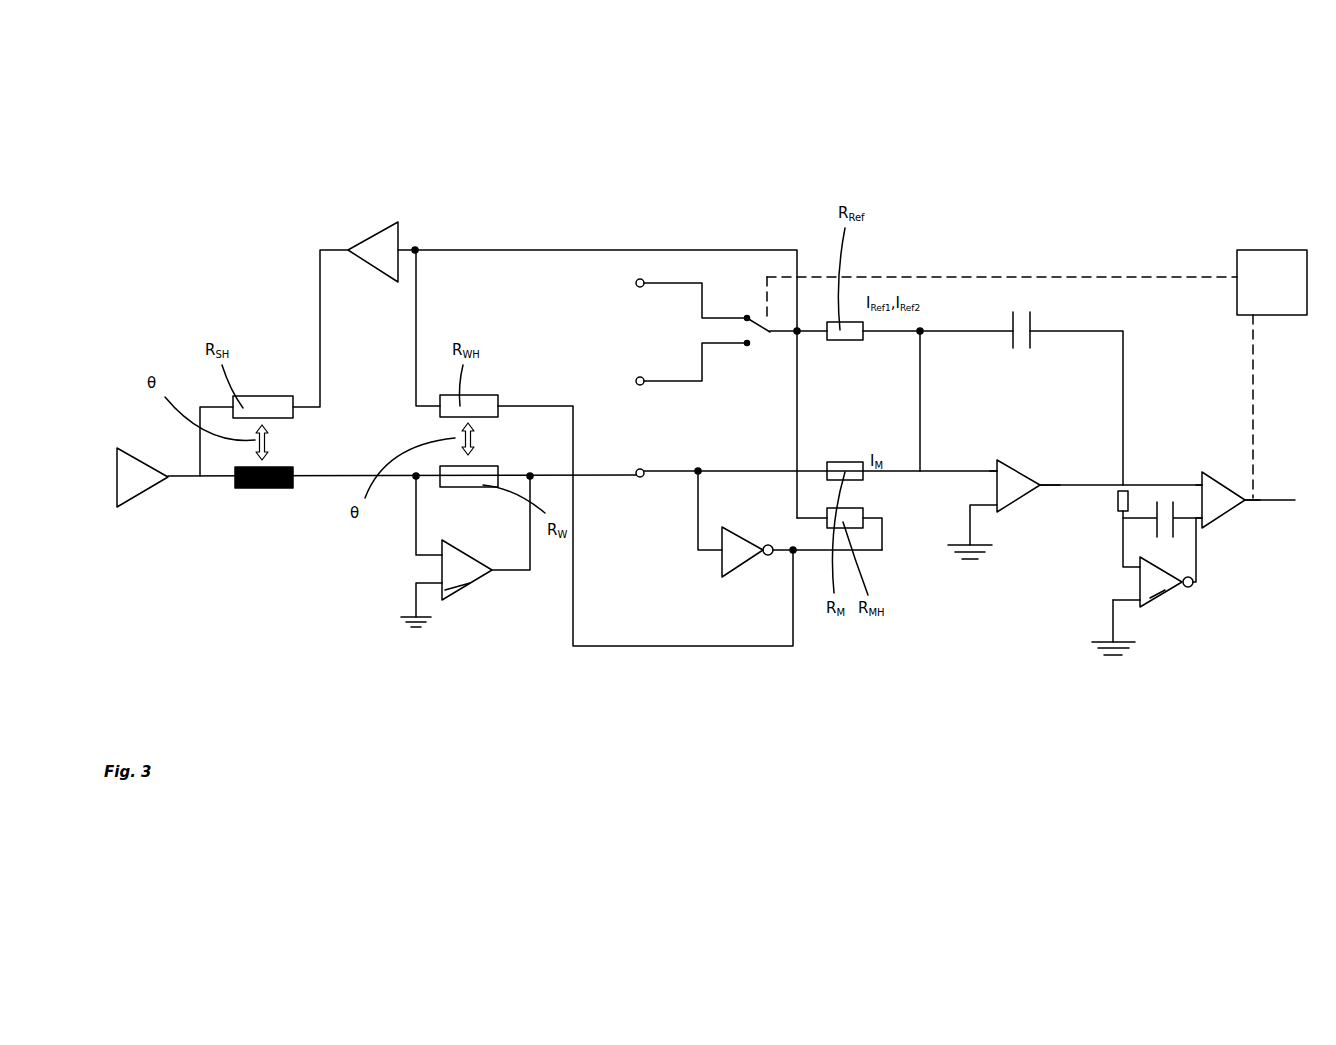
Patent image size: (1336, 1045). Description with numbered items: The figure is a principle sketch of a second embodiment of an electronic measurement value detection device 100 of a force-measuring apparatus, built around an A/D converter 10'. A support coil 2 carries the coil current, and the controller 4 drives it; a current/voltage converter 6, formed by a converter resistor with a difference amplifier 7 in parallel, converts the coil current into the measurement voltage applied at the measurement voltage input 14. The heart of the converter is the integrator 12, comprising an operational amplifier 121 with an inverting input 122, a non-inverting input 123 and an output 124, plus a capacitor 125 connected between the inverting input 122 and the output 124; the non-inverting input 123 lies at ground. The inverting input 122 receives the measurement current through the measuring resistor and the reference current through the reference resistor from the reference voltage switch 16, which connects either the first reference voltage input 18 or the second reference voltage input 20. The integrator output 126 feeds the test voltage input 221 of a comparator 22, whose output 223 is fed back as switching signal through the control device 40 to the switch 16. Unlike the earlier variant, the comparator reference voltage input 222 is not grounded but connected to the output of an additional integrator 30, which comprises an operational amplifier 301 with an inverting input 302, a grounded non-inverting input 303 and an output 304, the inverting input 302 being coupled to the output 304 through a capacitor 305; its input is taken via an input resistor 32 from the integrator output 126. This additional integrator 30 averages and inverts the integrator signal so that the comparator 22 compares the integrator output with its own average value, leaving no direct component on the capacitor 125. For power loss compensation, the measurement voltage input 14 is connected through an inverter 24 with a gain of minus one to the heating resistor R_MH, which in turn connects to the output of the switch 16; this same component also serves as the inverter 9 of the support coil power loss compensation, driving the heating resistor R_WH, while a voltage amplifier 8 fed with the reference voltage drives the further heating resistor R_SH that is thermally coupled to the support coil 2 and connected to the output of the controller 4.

The electronic measurement value detection device 100 is at (1030, 145).
The controller 4 is at (132, 483).
The support coil 2 is at (266, 490).
The voltage amplifier 8 is at (370, 250).
The current/voltage converter 6 is at (435, 518).
The difference amplifier 7 is at (455, 580).
The measurement voltage input 14 is at (645, 478).
The inverter 24 is at (790, 543).
The inverter 9 is at (740, 556).
The first reference voltage input 18 is at (641, 280).
The second reference voltage input 20 is at (645, 378).
The reference voltage switch 16 is at (770, 330).
The capacitor 125 is at (1012, 325).
The A/D converter 10' is at (1247, 257).
The control device 40 is at (1278, 270).
The integrator 12 is at (1100, 378).
The operational amplifier 121 is at (1010, 488).
The inverting input 122 is at (993, 468).
The non-inverting input 123 is at (993, 500).
The output 124 is at (1050, 486).
The integrator output 126 is at (1118, 490).
The input resistor 32 is at (1115, 498).
The capacitor 305 is at (1182, 528).
The additional integrator 30 is at (1182, 558).
The operational amplifier 301 is at (1155, 597).
The inverting input 302 is at (1113, 605).
The non-inverting input 303 is at (1130, 604).
The output 304 is at (1195, 590).
The comparator 22 is at (1226, 490).
The test voltage input 221 is at (1193, 488).
The reference voltage input 222 is at (1160, 486).
The output 223 is at (1250, 500).